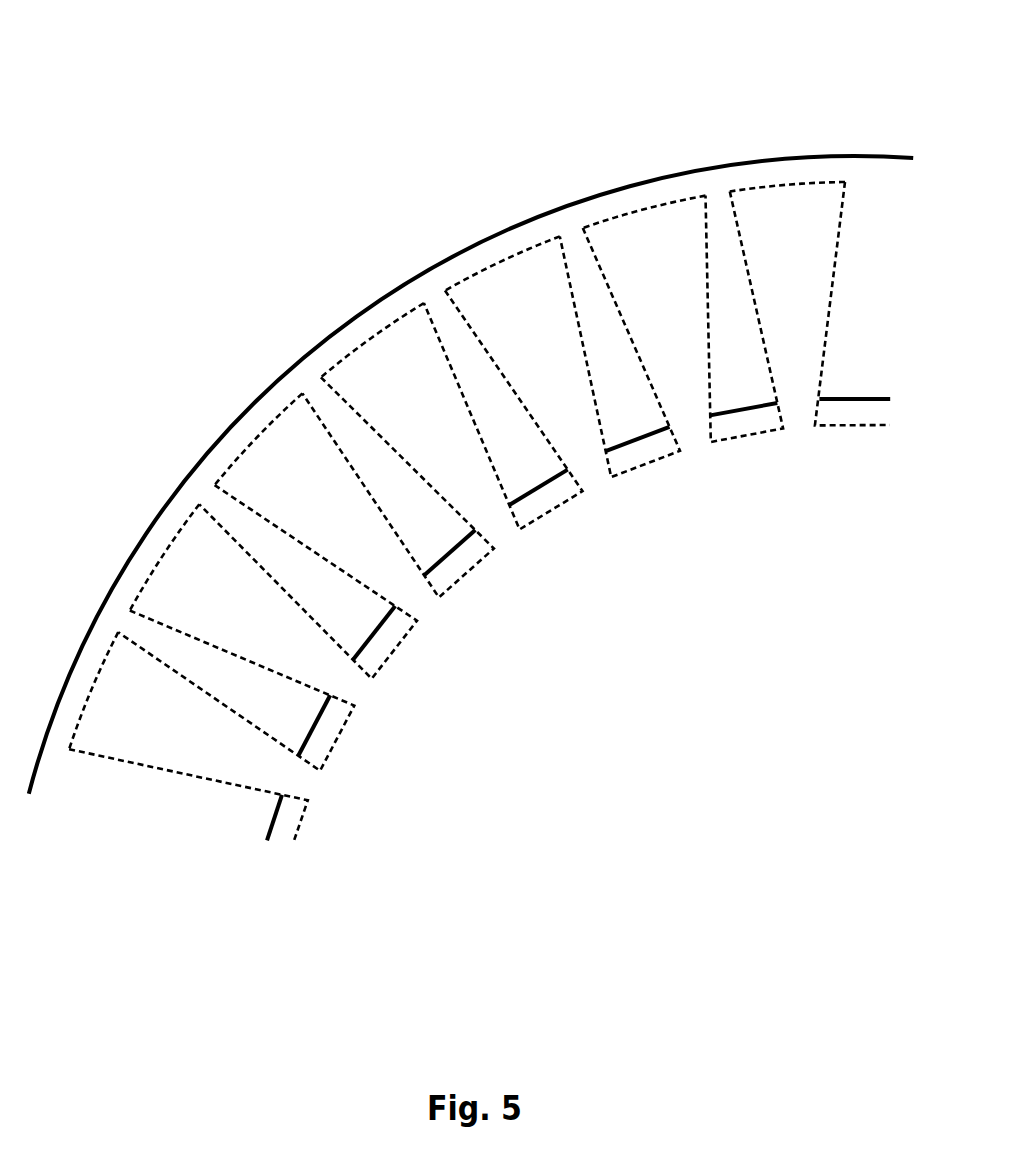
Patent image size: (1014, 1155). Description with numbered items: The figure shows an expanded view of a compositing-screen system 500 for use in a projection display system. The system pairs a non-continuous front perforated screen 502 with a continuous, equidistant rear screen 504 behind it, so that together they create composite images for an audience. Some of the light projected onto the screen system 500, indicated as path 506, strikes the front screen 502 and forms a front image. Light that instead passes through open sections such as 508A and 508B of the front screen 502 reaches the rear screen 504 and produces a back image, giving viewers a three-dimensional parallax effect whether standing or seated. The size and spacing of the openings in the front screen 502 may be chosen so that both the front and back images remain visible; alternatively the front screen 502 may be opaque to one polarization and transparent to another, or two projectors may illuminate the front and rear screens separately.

The compositing-screen system 500 is at (170, 71).
The perforated screen 502 is at (638, 450).
The rear screen 504 is at (533, 217).
The light path 506 is at (765, 452).
The open section 508A is at (497, 524).
The open section 508B is at (414, 591).